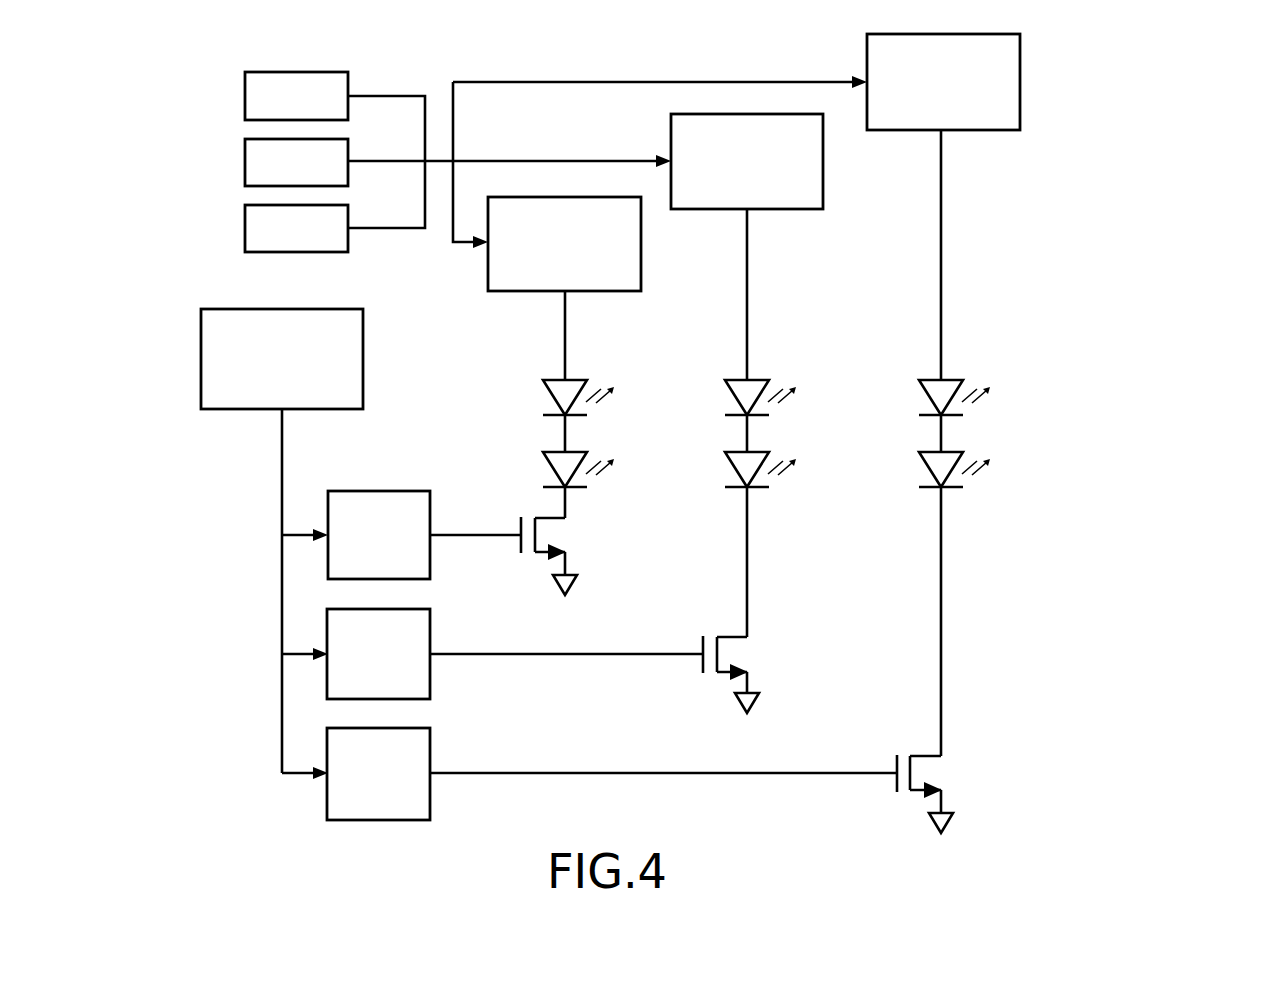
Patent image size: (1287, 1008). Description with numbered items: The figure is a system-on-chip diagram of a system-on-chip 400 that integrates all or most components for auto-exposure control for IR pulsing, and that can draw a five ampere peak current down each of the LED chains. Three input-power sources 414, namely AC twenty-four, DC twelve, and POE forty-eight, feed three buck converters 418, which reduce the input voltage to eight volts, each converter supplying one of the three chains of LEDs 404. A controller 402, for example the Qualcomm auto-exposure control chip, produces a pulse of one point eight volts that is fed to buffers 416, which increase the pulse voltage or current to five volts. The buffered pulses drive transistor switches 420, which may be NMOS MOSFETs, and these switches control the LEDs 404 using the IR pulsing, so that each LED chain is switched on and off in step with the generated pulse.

The system-on-chip 400 is at (1146, 147).
The controller 402 is at (205, 358).
The LEDs 404 is at (549, 394).
The input-power sources 414 is at (246, 93).
The buffers 416 is at (430, 558).
The converters 418 is at (642, 254).
The transistor switches 420 is at (566, 532).